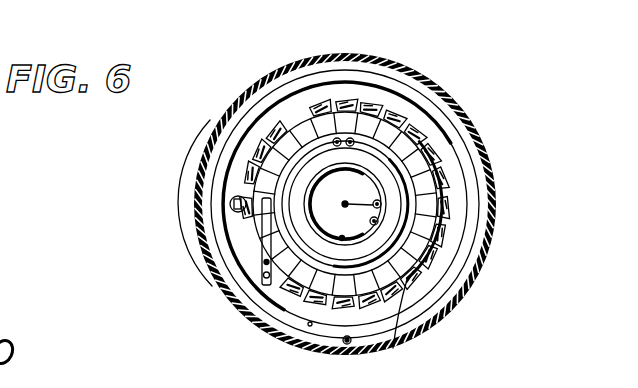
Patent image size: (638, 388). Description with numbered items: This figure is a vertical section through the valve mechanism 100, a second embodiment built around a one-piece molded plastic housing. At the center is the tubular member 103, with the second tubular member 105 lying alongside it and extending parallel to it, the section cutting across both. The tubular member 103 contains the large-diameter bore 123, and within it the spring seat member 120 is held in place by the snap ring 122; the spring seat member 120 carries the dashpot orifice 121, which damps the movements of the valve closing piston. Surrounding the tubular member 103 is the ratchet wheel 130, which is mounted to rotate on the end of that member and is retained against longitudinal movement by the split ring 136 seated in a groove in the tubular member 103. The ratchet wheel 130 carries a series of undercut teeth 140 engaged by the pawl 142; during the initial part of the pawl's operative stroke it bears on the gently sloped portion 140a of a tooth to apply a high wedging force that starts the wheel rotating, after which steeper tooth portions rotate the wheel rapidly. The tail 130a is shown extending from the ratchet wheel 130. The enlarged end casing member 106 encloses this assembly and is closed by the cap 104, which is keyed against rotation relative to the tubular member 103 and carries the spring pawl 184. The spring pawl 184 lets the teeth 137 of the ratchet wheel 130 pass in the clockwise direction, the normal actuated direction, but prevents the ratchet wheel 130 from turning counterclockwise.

The valve mechanism 100 is at (212, 290).
The tubular member 103 is at (383, 172).
The cap 104 is at (441, 327).
The second tubular member 105 is at (181, 217).
The enlarged end casing member 106 is at (309, 326).
The spring seat member 120 is at (356, 227).
The dashpot orifice 121 is at (378, 222).
The snap ring 122 is at (381, 204).
The bore 123 is at (342, 239).
The ratchet wheel 130 is at (430, 272).
The brake band tail 130a is at (393, 345).
The split ring 136 is at (338, 146).
The teeth 137 is at (277, 136).
The undercut teeth 140 is at (357, 103).
The gently sloped portion 140a is at (412, 68).
The pawl 142 is at (270, 163).
The spring pawl 184 is at (264, 281).